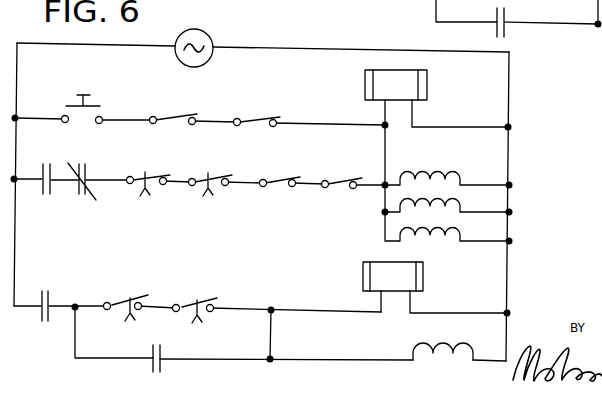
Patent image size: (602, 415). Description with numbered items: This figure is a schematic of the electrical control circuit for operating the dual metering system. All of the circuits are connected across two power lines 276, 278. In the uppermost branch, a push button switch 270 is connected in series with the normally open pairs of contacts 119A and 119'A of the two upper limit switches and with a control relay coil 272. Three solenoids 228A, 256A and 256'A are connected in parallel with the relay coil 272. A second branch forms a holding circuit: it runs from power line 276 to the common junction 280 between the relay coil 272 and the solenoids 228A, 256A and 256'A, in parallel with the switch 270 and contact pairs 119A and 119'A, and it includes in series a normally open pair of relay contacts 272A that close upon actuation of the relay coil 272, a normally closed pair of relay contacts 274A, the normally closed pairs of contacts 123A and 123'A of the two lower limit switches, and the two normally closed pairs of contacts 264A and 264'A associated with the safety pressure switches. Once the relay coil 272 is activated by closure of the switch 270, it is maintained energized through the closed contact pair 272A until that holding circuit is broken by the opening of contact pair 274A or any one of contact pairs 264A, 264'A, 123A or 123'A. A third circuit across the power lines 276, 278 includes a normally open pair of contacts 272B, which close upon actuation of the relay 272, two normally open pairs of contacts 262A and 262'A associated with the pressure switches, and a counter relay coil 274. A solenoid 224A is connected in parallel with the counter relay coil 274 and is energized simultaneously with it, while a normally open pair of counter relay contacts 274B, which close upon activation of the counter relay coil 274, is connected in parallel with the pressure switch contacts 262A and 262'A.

The power line 276 is at (17, 78).
The push button switch 270 is at (84, 93).
The normally open pair of contacts 119A is at (176, 117).
The normally open pair of contacts 119'A is at (233, 104).
The control relay coil 272 is at (428, 97).
The power line 278 is at (509, 97).
The normally open pair of relay contacts 272A is at (57, 166).
The normally closed pair of relay contacts 274A is at (90, 203).
The normally closed pair of contacts 264A is at (143, 178).
The normally closed pair of contacts 264'A is at (164, 209).
The normally closed pair of contacts 123A is at (375, 148).
The normally closed pair of contacts 123'A is at (246, 211).
The common junction 280 is at (386, 178).
The solenoid 228A is at (460, 177).
The solenoid 256A is at (463, 207).
The solenoid 256'A is at (488, 233).
The normally open pair of contacts 272B is at (82, 270).
The normally open pair of contacts 262A is at (163, 270).
The normally open pair of contacts 262'A is at (211, 293).
The normally opened pair of counter relay contacts 274B is at (163, 367).
The counter relay coil 274 is at (363, 273).
The solenoid 224A is at (457, 348).